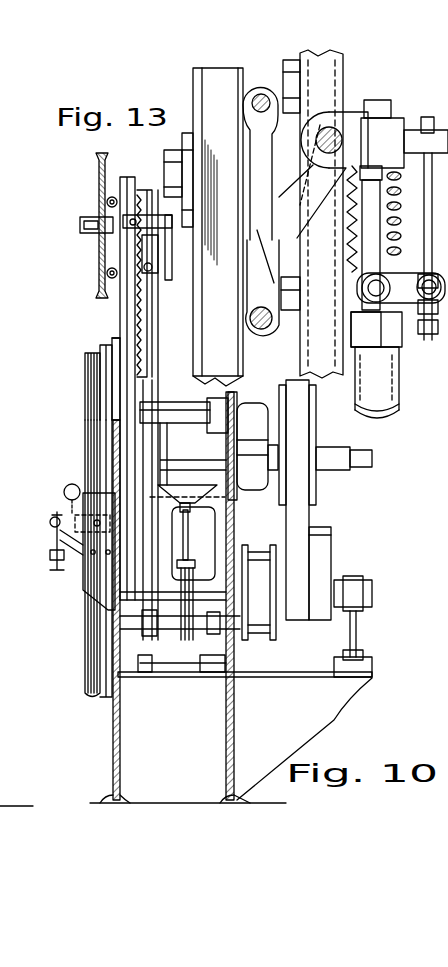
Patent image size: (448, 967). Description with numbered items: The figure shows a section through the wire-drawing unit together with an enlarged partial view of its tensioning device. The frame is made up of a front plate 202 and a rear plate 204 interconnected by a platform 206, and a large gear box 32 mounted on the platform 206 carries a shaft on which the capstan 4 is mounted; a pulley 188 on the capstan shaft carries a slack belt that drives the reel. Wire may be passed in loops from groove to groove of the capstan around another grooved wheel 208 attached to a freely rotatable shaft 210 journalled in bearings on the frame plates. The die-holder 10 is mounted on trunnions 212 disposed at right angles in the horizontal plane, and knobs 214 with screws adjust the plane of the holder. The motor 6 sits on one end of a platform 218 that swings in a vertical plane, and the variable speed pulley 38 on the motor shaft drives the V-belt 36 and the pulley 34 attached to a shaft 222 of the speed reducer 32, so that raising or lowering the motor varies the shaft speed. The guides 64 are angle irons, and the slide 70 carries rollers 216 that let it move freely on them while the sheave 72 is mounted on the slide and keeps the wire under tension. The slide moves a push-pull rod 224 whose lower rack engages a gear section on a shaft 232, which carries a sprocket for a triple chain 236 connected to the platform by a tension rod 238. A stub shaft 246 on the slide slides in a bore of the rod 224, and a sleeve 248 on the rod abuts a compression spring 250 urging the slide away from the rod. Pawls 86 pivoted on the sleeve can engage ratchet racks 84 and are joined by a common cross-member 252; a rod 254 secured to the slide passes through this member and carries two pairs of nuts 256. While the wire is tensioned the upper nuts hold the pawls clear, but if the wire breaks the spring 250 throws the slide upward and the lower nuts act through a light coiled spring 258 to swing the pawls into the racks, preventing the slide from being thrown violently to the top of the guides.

In FIG. 10, the capstan 4 is at (93, 642).
In FIG. 10, the motor 6 is at (254, 428).
In FIG. 10, the die-holder 10 is at (92, 478).
In FIG. 10, the gear box 32 is at (202, 533).
In FIG. 10, the pulley 34 is at (321, 547).
In FIG. 10, the V-belt 36 is at (301, 521).
In FIG. 10, the variable speed pulley 38 is at (314, 489).
In FIG. 13, the guides 64 is at (311, 365).
In FIG. 10, the guides 64 is at (128, 300).
In FIG. 13, the slide 70 is at (288, 120).
In FIG. 10, the slide 70 is at (97, 240).
In FIG. 13, the sheave 72 is at (217, 97).
In FIG. 10, the sheave 72 is at (97, 177).
In FIG. 13, the ratchet racks 84 is at (381, 365).
In FIG. 13, the pawls 86 is at (371, 255).
In FIG. 10, the pawls 86 is at (163, 248).
In FIG. 10, the pulley 188 is at (258, 627).
In FIG. 10, the front plate 202 is at (117, 745).
In FIG. 10, the rear plate 204 is at (232, 728).
In FIG. 10, the platform 206 is at (176, 677).
In FIG. 10, the grooved wheel 208 is at (93, 388).
In FIG. 10, the shaft 210 is at (165, 412).
In FIG. 10, the trunnions 212 is at (97, 527).
In FIG. 10, the knobs 214 is at (64, 493).
In FIG. 13, the rollers 216 is at (291, 77).
In FIG. 10, the rollers 216 is at (107, 204).
In FIG. 10, the platform 218 is at (192, 487).
In FIG. 10, the shaft 222 is at (334, 587).
In FIG. 13, the push-pull rod 224 is at (387, 398).
In FIG. 10, the push-pull rod 224 is at (152, 330).
In FIG. 10, the shaft 232 is at (201, 630).
In FIG. 10, the triple chain 236 is at (178, 626).
In FIG. 10, the tension rod 238 is at (185, 555).
In FIG. 13, the stub shaft 246 is at (371, 177).
In FIG. 13, the sleeve 248 is at (367, 312).
In FIG. 13, the compression spring 250 is at (356, 245).
In FIG. 13, the cross-member 252 is at (386, 292).
In FIG. 13, the rod 254 is at (424, 198).
In FIG. 13, the nuts 256 is at (387, 272).
In FIG. 13, the light coiled spring 258 is at (421, 318).